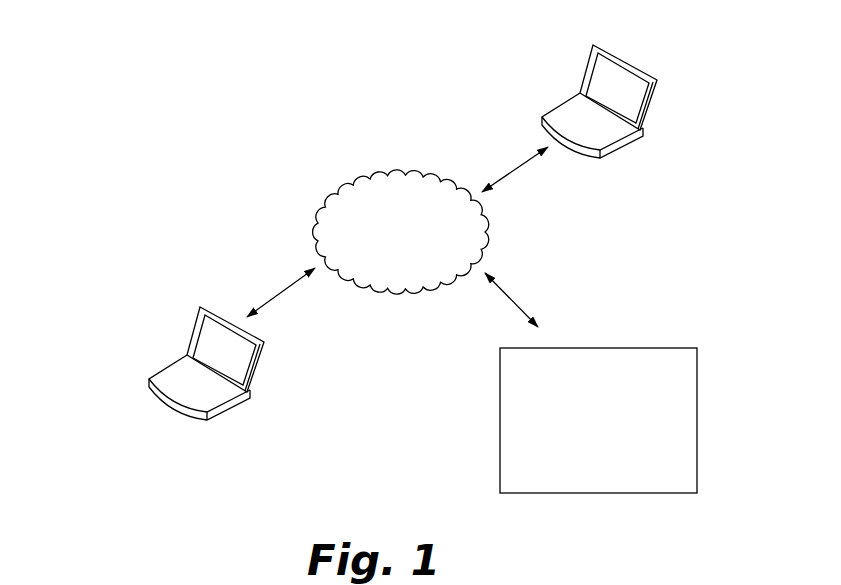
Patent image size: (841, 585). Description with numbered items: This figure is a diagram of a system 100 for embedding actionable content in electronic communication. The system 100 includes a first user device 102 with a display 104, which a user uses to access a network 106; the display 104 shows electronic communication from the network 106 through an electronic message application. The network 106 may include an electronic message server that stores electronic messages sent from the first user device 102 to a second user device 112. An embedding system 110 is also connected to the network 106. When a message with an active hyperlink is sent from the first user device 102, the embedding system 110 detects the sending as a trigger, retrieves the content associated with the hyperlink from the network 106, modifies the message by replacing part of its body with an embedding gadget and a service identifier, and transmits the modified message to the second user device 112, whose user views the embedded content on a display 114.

The system 100 is at (152, 120).
The first user device 102 is at (205, 393).
The display 104 is at (207, 342).
The network 106 is at (372, 207).
The embedding system 110 is at (598, 420).
The second user device 112 is at (602, 132).
The display 114 is at (608, 90).